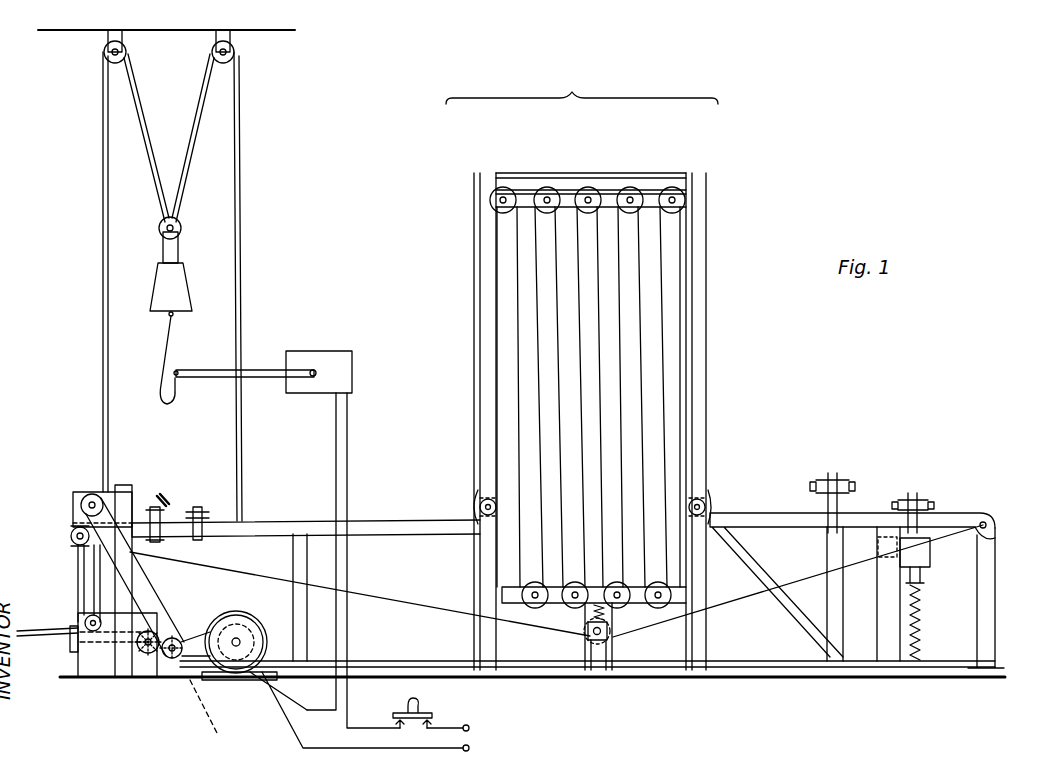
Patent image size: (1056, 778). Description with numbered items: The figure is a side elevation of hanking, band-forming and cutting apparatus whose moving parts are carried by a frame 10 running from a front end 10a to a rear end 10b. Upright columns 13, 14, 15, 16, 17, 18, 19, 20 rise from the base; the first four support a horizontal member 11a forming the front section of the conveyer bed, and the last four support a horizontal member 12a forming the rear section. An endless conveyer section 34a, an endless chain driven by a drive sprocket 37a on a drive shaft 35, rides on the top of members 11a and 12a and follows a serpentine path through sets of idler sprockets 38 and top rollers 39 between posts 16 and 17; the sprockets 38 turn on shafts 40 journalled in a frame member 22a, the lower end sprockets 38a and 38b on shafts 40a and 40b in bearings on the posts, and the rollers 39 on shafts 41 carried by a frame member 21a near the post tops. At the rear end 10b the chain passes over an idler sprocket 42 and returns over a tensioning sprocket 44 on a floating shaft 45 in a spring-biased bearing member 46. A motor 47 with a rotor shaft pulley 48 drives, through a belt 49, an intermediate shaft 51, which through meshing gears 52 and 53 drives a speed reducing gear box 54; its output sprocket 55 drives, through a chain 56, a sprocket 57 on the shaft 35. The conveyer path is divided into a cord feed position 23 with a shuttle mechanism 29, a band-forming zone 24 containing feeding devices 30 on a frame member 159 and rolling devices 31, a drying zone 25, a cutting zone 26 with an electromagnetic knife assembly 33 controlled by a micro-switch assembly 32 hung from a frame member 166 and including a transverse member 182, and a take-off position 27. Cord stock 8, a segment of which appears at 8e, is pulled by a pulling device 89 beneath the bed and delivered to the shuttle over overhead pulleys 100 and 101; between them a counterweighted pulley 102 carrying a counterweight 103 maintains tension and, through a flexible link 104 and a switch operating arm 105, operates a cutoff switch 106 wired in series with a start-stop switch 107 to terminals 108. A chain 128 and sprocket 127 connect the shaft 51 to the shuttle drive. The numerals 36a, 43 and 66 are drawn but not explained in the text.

The cord stock 8 is at (245, 415).
The segment of cord stock 8e is at (34, 630).
The frame 10 is at (474, 548).
The front end of the frame 10a is at (60, 470).
The rear end of the frame 10b is at (993, 466).
The horizontally disposed member 11a is at (381, 519).
The horizontally disposed member 12a is at (782, 542).
The upright supporting column 13 is at (74, 560).
The upright supporting column 14 is at (130, 548).
The upright supporting column 15 is at (292, 562).
The upright supporting column 16 is at (478, 638).
The upright supporting column 17 is at (708, 636).
The upright supporting column 18 is at (828, 608).
The upright supporting column 19 is at (880, 620).
The upright supporting column 20 is at (996, 606).
The horizontal frame member 21a is at (612, 190).
The horizontally disposed frame member 22a is at (690, 644).
The cord feed position 23 is at (140, 442).
The band-forming zone 24 is at (228, 442).
The drying zone 25 is at (582, 87).
The cord cutting zone 26 is at (926, 406).
The cord take-off position 27 is at (990, 406).
The shuttle mechanism 29 is at (102, 486).
The feeding device 30 is at (176, 488).
The rolling device 31 is at (204, 506).
The micro-switch assembly 32 is at (838, 466).
The electromagnetic knife assembly 33 is at (921, 486).
The conveyer section 34a is at (372, 596).
The drive shaft 35 is at (72, 532).
The sprocket 36a is at (78, 512).
The drive sprocket 37a is at (70, 542).
The idler rollers or sprockets 38 is at (578, 604).
The lower end sprocket 38a is at (478, 508).
The lower end sprocket 38b is at (708, 506).
The top rollers 39 is at (548, 188).
The shafts 40 is at (620, 592).
The shaft 40a is at (486, 500).
The shaft 40b is at (704, 500).
The shafts 41 is at (586, 204).
The idler roller or sprocket 42 is at (992, 522).
The rail end 43 is at (988, 512).
The tensioning sprocket 44 is at (598, 650).
The floating shaft 45 is at (604, 644).
The floating bearing member 46 is at (610, 626).
The motor 47 is at (248, 628).
The rotor shaft pulley 48 is at (234, 676).
The belt 49 is at (204, 634).
The intermediate shaft 51 is at (178, 638).
The gear 52 is at (170, 662).
The gear 53 is at (148, 656).
The speed reducing gear box 54 is at (112, 666).
The sprocket 55 is at (72, 646).
The driving chain 56 is at (82, 578).
The sprocket 57 is at (76, 550).
The pulley 66 is at (84, 624).
The pulling device 89 is at (212, 719).
The overhead pulley 100 is at (230, 62).
The overhead pulley 101 is at (108, 62).
The counterweighted pulley 102 is at (170, 216).
The counterweight 103 is at (186, 284).
The flexible link 104 is at (170, 348).
The switch operating arm 105 is at (286, 369).
The cutoff switch 106 is at (353, 371).
The start-stop switch 107 is at (434, 698).
The bracketed terminals 108 is at (470, 726).
The sprocket 127 is at (80, 492).
The chain 128 is at (142, 604).
The frame member 159 is at (152, 506).
The transversely extending frame member 166 is at (842, 508).
The member 182 is at (898, 548).